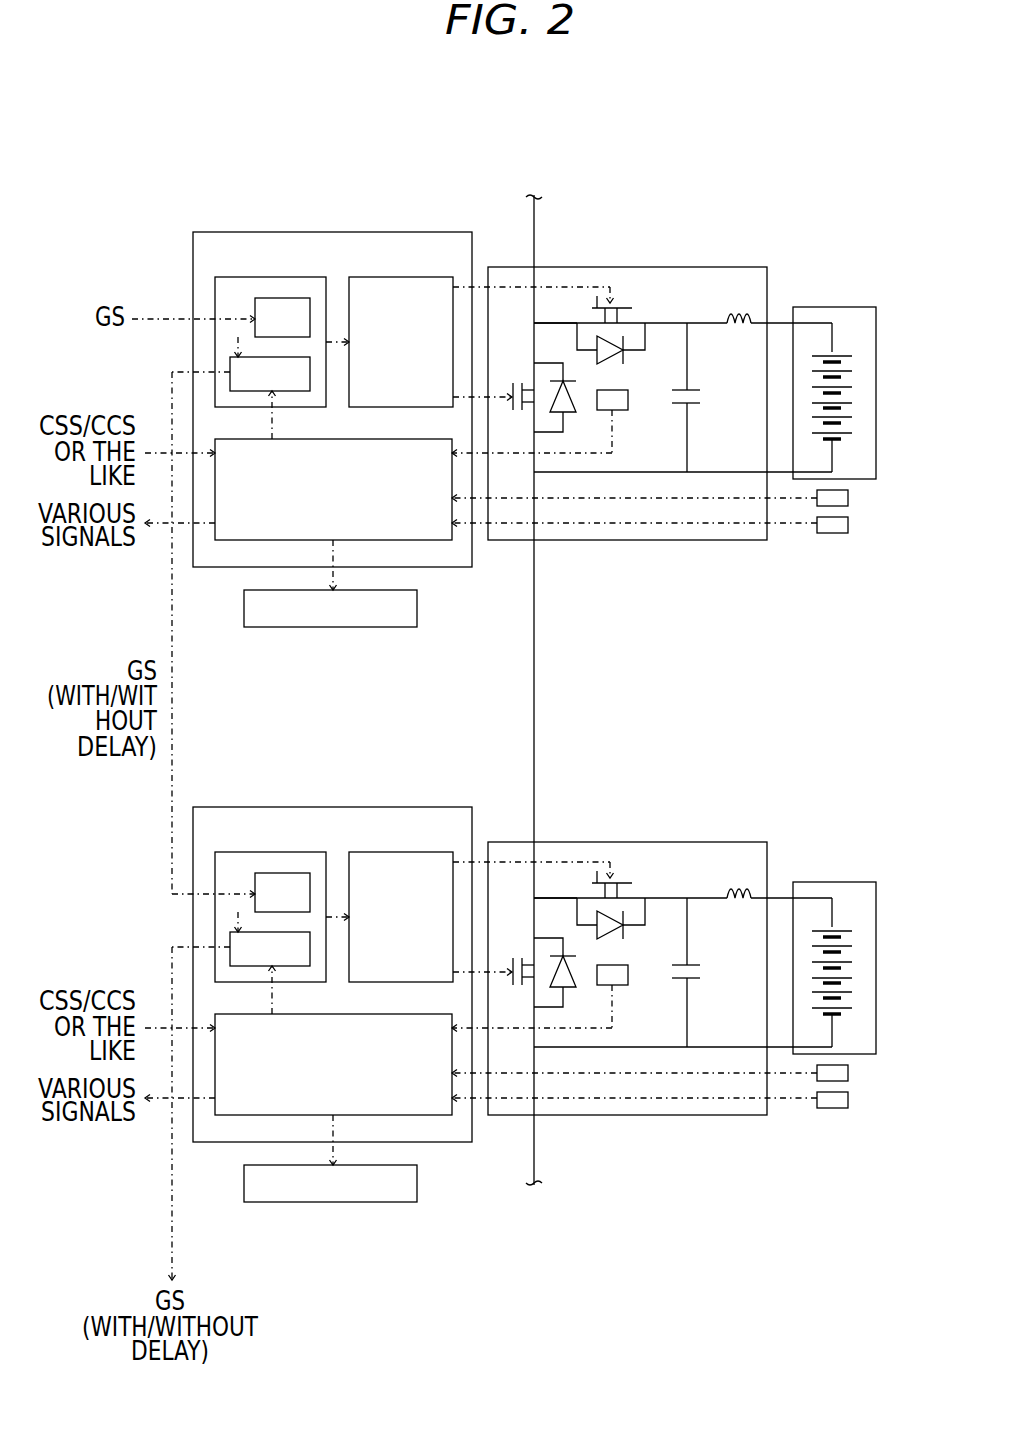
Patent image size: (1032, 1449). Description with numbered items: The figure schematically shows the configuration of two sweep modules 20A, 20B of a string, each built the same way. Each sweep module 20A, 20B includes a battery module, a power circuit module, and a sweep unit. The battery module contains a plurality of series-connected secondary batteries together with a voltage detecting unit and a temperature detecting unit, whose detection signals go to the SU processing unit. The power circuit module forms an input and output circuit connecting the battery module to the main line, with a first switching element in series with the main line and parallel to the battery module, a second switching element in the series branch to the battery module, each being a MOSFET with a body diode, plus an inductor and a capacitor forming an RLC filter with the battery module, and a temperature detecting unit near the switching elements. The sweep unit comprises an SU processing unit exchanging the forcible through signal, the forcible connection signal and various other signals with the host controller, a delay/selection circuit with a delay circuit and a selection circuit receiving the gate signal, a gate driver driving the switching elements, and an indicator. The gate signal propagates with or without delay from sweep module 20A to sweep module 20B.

The sweep module 20A is at (746, 152).
The sweep module 20B is at (746, 727).